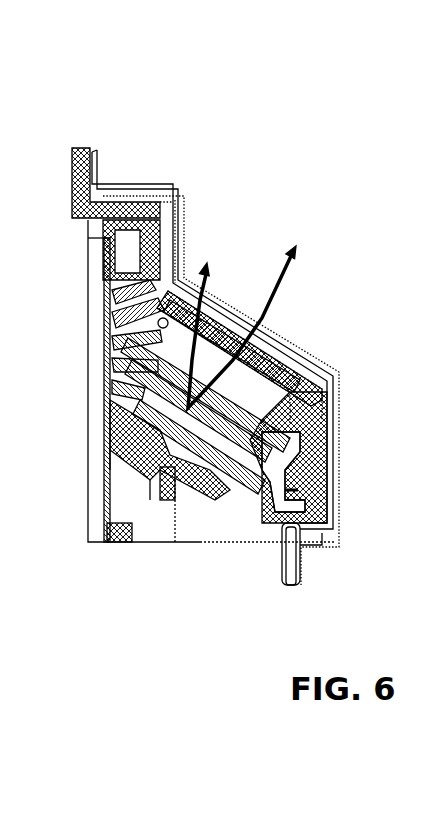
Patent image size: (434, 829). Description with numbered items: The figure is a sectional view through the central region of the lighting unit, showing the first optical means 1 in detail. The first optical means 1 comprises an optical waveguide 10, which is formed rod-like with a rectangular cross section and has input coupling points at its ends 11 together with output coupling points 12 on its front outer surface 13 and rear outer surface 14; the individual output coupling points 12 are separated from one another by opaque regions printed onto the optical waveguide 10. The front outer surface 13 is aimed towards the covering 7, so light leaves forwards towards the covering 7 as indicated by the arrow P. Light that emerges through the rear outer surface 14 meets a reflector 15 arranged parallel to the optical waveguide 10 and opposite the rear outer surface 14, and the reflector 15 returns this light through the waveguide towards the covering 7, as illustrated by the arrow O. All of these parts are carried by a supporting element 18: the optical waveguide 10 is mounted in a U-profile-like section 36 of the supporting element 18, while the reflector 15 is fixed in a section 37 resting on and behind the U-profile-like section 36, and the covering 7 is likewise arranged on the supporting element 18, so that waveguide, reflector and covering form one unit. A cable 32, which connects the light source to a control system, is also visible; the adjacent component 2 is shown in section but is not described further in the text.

The first optical means 1 is at (132, 442).
The plate 2 is at (80, 232).
The covering 7 is at (195, 302).
The optical waveguide 10 is at (282, 403).
The input coupling point 11 is at (212, 348).
The output coupling point 12 is at (232, 383).
The front outer surface 13 is at (280, 397).
The rear outer surface 14 is at (318, 455).
The reflector 15 is at (220, 437).
The supporting element 18 is at (315, 412).
The cable 32 is at (108, 285).
The U-profile-like section 36 is at (295, 428).
The section 37 is at (175, 452).
The arrow O is at (186, 366).
The arrow P is at (273, 277).